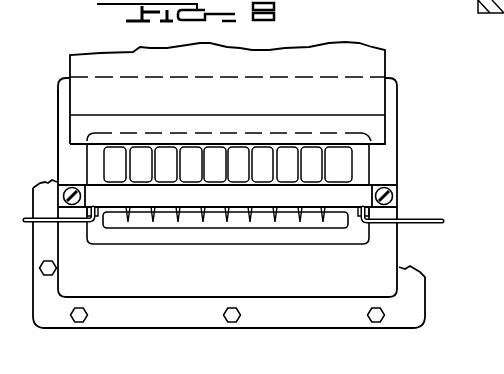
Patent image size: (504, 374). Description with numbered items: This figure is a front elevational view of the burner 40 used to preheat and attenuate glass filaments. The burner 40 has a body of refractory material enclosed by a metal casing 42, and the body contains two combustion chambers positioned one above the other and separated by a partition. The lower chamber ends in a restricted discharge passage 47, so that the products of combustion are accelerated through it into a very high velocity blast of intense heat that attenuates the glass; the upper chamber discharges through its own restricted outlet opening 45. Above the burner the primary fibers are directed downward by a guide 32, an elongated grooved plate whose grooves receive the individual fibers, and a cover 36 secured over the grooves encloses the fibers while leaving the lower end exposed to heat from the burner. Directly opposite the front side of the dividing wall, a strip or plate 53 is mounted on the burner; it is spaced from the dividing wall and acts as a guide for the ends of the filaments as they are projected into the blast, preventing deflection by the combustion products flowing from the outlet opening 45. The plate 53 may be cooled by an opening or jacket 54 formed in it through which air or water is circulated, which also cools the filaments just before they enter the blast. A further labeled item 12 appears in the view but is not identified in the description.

The slot 12 is at (323, 168).
The guide 32 is at (350, 62).
The cover 36 is at (378, 70).
The burner 40 is at (400, 137).
The metal casing 42 is at (58, 104).
The restricted outlet opening 45 is at (110, 163).
The discharge passage 47 is at (334, 222).
The plate 53 is at (353, 192).
The jacket 54 is at (419, 223).